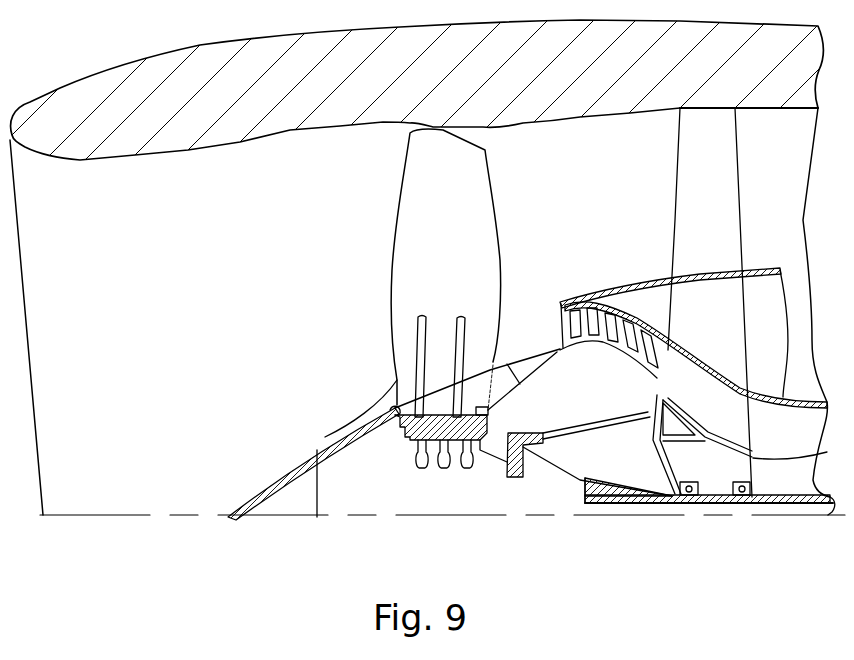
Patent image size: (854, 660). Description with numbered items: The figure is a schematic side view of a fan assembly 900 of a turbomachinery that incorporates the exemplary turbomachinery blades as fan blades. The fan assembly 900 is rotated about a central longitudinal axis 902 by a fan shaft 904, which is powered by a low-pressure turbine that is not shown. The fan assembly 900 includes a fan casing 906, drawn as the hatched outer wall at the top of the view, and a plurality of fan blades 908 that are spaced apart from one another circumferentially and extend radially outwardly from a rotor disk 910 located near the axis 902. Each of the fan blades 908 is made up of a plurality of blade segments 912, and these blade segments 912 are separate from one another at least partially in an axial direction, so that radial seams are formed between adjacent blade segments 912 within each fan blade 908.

The fan assembly 900 is at (420, 314).
The central longitudinal axis 902 is at (382, 515).
The fan shaft 904 is at (597, 490).
The fan casing 906 is at (292, 131).
The fan blades 908 is at (482, 206).
The rotor disk 910 is at (418, 463).
The blade segments 912 is at (408, 357).